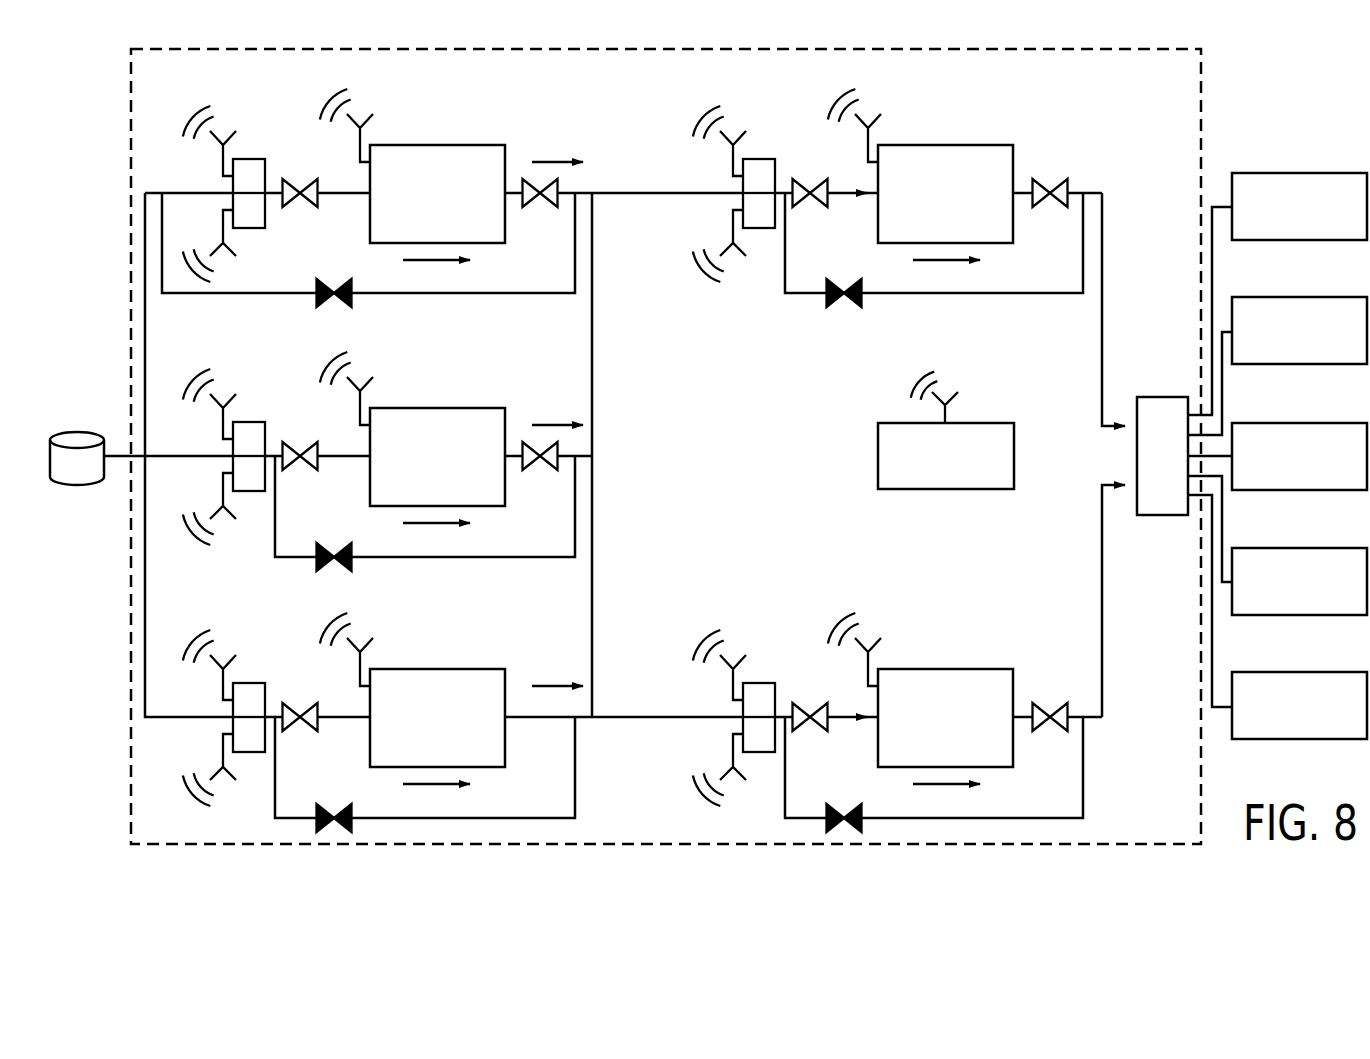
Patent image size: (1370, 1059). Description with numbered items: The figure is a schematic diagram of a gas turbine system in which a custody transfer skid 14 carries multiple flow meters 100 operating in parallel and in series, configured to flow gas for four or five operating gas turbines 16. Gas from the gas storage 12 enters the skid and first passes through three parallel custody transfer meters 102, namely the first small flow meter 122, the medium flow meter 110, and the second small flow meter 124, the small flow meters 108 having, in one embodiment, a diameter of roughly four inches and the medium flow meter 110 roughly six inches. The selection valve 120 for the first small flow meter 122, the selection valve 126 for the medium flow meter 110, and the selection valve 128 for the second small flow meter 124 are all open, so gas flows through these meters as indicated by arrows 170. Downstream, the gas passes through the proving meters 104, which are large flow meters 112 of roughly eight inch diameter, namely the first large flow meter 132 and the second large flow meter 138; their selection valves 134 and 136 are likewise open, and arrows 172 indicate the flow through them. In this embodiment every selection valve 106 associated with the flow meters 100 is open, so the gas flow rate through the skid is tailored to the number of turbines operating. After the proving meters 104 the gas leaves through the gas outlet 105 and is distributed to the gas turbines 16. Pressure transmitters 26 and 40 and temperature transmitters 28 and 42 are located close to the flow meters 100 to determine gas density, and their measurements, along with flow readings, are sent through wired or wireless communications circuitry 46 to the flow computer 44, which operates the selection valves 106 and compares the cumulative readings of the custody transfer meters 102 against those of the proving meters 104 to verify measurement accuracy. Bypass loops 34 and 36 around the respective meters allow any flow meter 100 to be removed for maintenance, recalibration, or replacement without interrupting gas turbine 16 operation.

The gas storage 12 is at (102, 432).
The custody transfer skid 14 is at (131, 192).
The gas turbine 16 is at (1300, 173).
The pressure transmitter 26 is at (248, 159).
The temperature transmitter 28 is at (250, 228).
The bypass loop 34 is at (465, 293).
The bypass loop 36 is at (975, 293).
The pressure transmitter 40 is at (758, 159).
The temperature transmitter 42 is at (760, 228).
The flow computer 44 is at (878, 458).
The communications circuitry 46 is at (950, 413).
The flow meter 100 is at (719, 425).
The custody transfer meter 102 is at (441, 142).
The proving meter 104 is at (951, 142).
The gas outlet 105 is at (1160, 397).
The selection valve 106 is at (298, 210).
The small flow meter 108 is at (412, 145).
The medium flow meter 110 is at (510, 413).
The large flow meter 112 is at (1018, 150).
The selection valve 120 is at (306, 191).
The first small flow meter 122 is at (508, 150).
The second small flow meter 124 is at (414, 669).
The selection valve 126 is at (306, 454).
The selection valve 128 is at (306, 715).
The first large flow meter 132 is at (922, 145).
The selection valve 134 is at (816, 191).
The selection valve 136 is at (816, 715).
The second large flow meter 138 is at (922, 669).
The arrows 170 is at (557, 161).
The arrows 172 is at (941, 262).